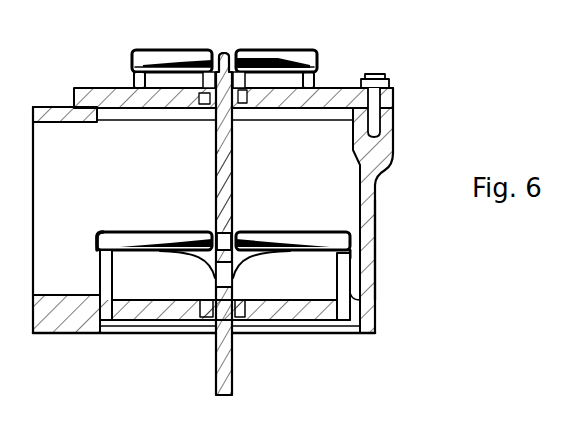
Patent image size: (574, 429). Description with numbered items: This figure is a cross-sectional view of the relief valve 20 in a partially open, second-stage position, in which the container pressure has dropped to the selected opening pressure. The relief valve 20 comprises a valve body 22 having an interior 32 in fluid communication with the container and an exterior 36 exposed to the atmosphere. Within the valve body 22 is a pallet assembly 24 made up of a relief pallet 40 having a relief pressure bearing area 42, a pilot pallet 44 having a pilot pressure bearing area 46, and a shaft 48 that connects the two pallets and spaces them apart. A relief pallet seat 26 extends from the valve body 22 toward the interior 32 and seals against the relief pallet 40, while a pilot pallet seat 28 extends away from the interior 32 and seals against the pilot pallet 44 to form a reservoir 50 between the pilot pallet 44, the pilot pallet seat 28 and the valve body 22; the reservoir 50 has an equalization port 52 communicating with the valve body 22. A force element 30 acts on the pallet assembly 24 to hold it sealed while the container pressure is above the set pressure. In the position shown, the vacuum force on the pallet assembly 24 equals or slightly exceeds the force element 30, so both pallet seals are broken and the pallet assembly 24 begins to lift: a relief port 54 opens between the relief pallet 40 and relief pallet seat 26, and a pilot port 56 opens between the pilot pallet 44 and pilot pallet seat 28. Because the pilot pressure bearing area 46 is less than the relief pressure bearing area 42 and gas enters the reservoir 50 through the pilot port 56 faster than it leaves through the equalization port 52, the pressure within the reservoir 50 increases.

The relief valve 20 is at (423, 100).
The valve body 22 is at (68, 115).
The pallet assembly 24 is at (238, 148).
The relief pallet seat 26 is at (108, 272).
The pilot pallet seat 28 is at (141, 89).
The force element 30 is at (228, 196).
The interior 32 is at (354, 186).
The exterior 36 is at (62, 338).
The relief pallet 40 is at (303, 232).
The relief pressure bearing area 42 is at (172, 231).
The pilot pallet 44 is at (253, 52).
The pilot pressure bearing area 46 is at (265, 68).
The shaft 48 is at (226, 162).
The reservoir 50 is at (171, 74).
The equalization port 52 is at (207, 109).
The relief port 54 is at (98, 252).
The pilot port 56 is at (136, 71).